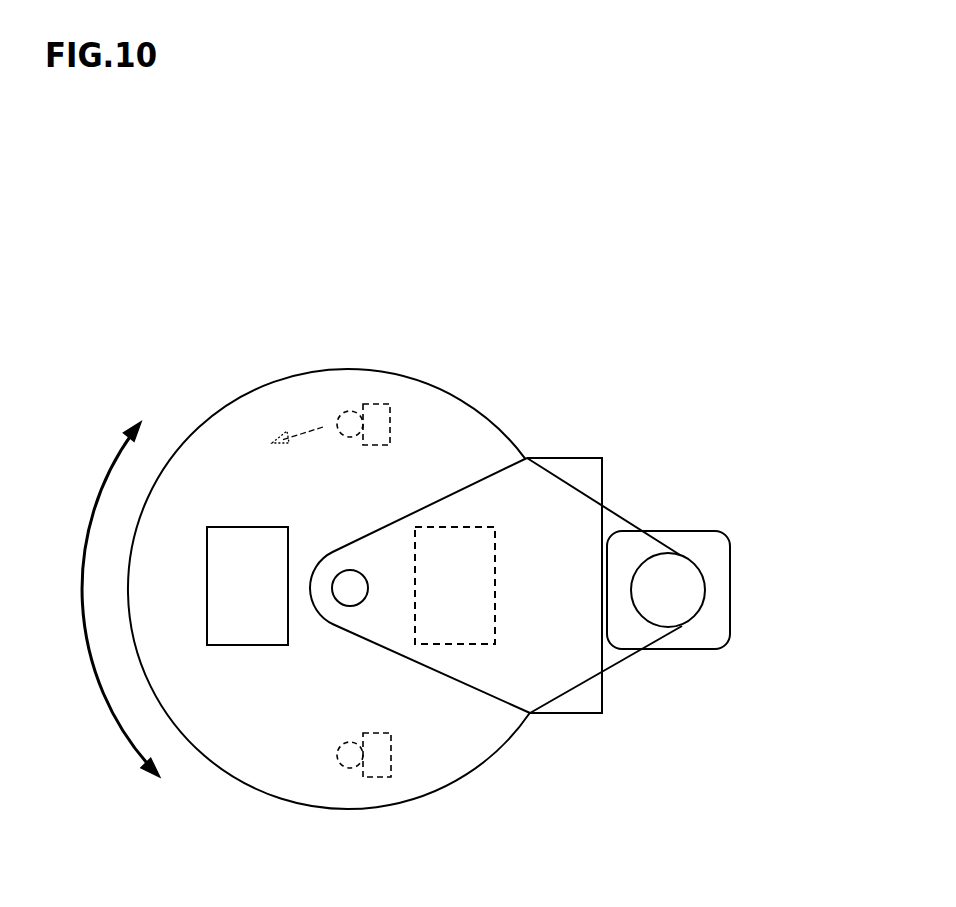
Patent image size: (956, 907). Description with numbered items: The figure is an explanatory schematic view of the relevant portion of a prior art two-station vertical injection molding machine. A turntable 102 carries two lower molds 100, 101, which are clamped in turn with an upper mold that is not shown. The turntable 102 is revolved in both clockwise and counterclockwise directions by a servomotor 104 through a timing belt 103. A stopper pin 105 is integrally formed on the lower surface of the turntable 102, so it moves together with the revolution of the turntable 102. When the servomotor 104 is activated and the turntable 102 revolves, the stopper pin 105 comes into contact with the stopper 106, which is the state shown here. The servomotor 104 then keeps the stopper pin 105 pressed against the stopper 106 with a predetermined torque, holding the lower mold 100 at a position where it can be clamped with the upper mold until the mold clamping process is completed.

The lower mold 100 is at (466, 622).
The lower mold 101 is at (248, 620).
The turntable 102 is at (283, 737).
The timing belt 103 is at (623, 670).
The servomotor 104 is at (708, 562).
The stopper pin 105 is at (350, 423).
The stopper 106 is at (388, 428).